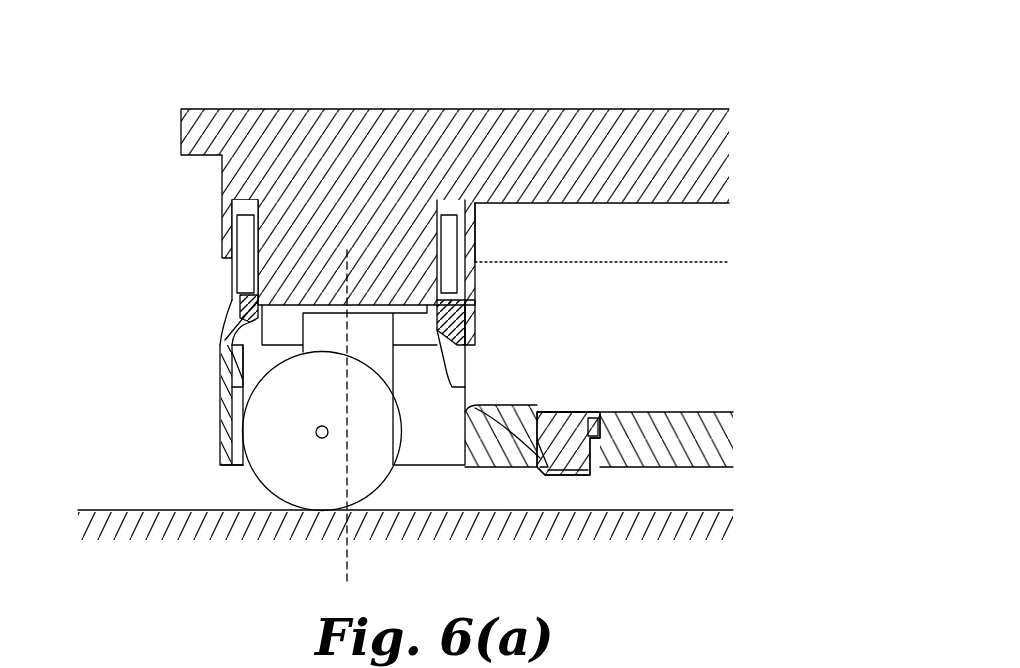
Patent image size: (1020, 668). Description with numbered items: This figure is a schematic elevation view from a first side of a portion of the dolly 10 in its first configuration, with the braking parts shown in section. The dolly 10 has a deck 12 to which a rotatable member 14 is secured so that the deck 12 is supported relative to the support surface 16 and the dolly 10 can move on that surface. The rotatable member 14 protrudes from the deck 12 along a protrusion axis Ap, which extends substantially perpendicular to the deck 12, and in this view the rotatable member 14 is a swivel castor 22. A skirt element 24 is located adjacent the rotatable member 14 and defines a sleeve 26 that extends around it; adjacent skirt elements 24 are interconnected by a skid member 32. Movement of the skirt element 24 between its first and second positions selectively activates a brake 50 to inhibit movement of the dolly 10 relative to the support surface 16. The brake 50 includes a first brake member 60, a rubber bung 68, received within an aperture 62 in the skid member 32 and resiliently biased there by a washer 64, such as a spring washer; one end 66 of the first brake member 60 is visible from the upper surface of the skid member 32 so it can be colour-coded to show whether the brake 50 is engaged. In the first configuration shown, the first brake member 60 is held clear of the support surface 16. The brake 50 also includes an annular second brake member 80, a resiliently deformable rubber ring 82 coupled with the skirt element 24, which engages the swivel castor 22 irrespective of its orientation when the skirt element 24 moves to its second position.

The dolly 10 is at (190, 68).
The deck 12 is at (592, 130).
The rotatable member 14 is at (295, 488).
The support surface 16 is at (160, 512).
The swivel castor 22 is at (365, 477).
The skirt element 24 is at (220, 415).
The sleeve 26 is at (220, 385).
The skid member 32 is at (720, 415).
The brake 50 is at (457, 345).
The first brake member 60 is at (585, 413).
The aperture 62 is at (598, 440).
The washer 64 is at (540, 455).
The end of first brake member 66 is at (560, 413).
The rubber bung 68 is at (577, 475).
The second brake member 80 is at (237, 320).
The rubber ring 82 is at (227, 345).
The protrusion axis Ap is at (350, 290).